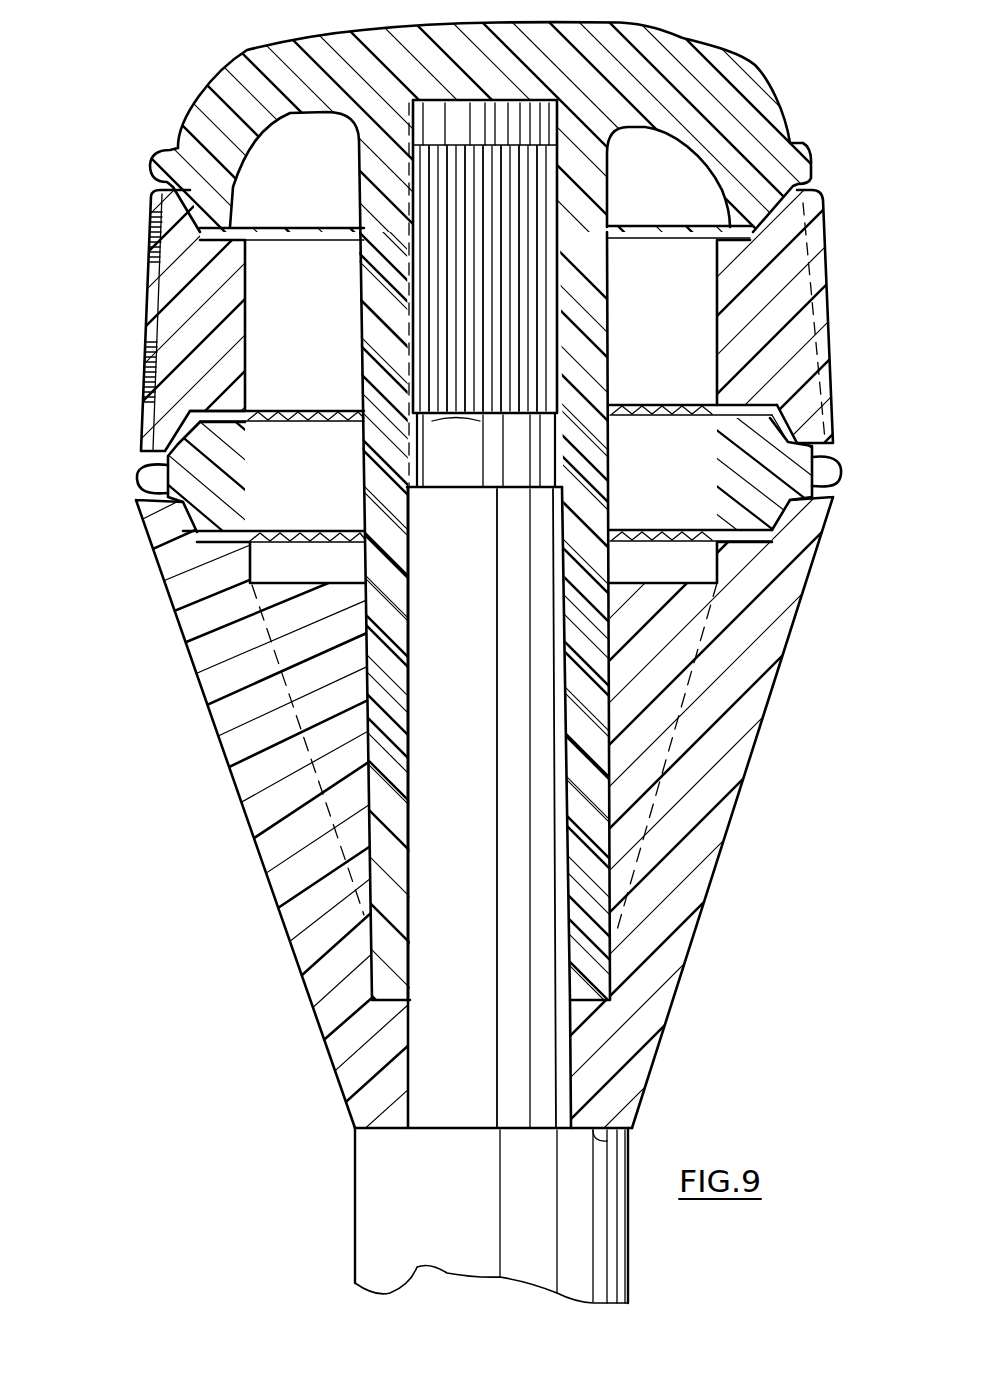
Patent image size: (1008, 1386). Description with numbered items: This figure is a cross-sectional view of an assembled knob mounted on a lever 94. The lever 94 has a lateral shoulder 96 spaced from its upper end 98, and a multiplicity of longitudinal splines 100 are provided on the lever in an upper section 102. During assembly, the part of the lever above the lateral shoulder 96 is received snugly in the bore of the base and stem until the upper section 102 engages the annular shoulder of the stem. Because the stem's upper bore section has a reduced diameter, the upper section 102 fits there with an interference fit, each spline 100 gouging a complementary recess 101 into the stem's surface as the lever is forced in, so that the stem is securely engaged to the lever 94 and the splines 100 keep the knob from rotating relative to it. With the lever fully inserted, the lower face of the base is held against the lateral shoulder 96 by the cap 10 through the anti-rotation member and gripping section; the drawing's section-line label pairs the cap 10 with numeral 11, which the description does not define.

The upper end 98 is at (494, 106).
The longitudinal splines 100 is at (443, 197).
The upper section 102 is at (438, 277).
The complementary recess 101 is at (410, 380).
The cap 10 is at (122, 502).
The clamping ring 11 is at (882, 530).
The lever 94 is at (372, 1152).
The lateral shoulder 96 is at (625, 1141).